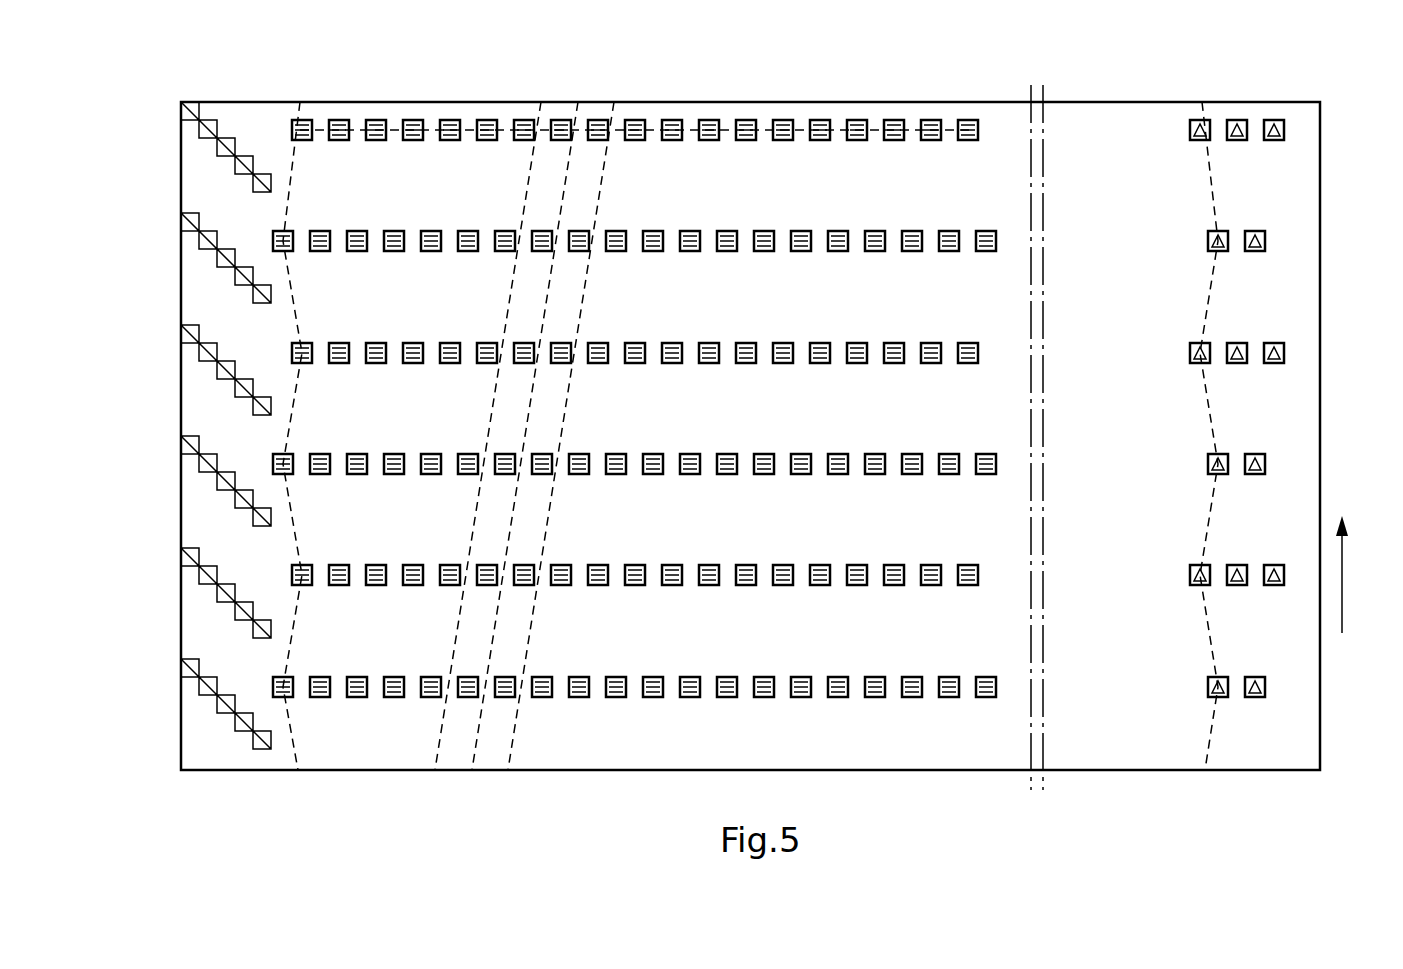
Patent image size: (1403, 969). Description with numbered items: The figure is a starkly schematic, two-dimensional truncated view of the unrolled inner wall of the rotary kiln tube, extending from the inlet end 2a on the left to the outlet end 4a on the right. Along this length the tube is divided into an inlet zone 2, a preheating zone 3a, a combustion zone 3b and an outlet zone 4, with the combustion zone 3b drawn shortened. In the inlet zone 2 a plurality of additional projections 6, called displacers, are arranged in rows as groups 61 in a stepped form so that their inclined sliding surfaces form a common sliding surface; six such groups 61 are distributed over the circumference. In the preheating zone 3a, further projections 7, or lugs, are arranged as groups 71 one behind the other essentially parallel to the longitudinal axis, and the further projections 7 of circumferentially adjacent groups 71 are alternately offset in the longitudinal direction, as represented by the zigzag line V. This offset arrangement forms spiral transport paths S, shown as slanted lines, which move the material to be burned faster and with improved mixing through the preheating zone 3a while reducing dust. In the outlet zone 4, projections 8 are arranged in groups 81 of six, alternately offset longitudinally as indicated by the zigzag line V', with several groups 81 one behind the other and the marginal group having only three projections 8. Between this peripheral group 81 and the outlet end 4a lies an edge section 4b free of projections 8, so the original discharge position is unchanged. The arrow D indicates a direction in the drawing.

The inlet zone 2 is at (275, 87).
The preheating zone 3a is at (1000, 87).
The combustion zone 3b is at (1158, 87).
The outlet zone 4 is at (1320, 87).
The additional projections 6 is at (187, 110).
The group of additional projections 61 is at (186, 163).
The further projections 7 is at (580, 454).
The groups of further projections 71 is at (995, 480).
The zigzag line V is at (318, 436).
The spiral transport paths S is at (588, 308).
The projections 8 is at (1276, 363).
The group of projections 81 is at (1184, 108).
The zigzag line V' is at (1238, 436).
The edge section 4b is at (1298, 268).
The conveying direction D is at (1342, 585).
The inlet end 2a is at (168, 719).
The outlet end 4a is at (1332, 719).